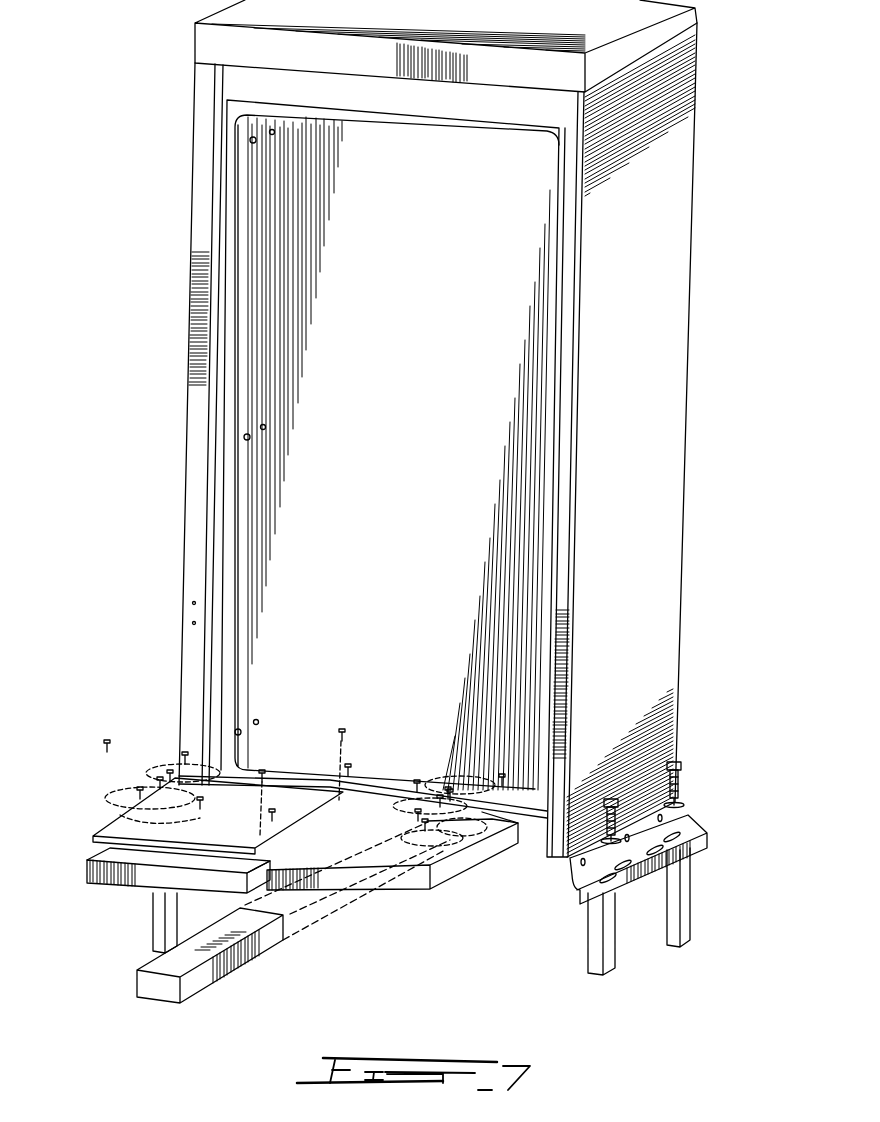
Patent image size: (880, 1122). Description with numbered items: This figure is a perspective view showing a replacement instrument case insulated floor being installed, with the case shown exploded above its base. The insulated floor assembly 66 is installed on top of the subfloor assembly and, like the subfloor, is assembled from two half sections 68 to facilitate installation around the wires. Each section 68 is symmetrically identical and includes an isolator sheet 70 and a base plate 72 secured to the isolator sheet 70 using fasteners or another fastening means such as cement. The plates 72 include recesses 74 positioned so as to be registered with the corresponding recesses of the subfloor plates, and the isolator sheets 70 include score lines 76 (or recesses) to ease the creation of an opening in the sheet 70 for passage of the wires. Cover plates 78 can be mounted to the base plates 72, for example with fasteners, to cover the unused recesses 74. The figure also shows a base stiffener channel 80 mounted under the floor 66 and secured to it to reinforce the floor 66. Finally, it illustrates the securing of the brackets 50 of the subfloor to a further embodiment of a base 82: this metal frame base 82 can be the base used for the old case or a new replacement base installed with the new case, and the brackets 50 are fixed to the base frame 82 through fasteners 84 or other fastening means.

The bracket 50 is at (698, 840).
The insulated floor assembly 66 is at (347, 880).
The half section 68 is at (400, 890).
The isolator sheet 70 is at (287, 872).
The base plate 72 is at (437, 850).
The recess 74 is at (105, 830).
The score line 76 is at (443, 863).
The cover plate 78 is at (448, 790).
The base stiffener channel 80 is at (173, 957).
The base 82 is at (683, 910).
The fastener 84 is at (677, 782).